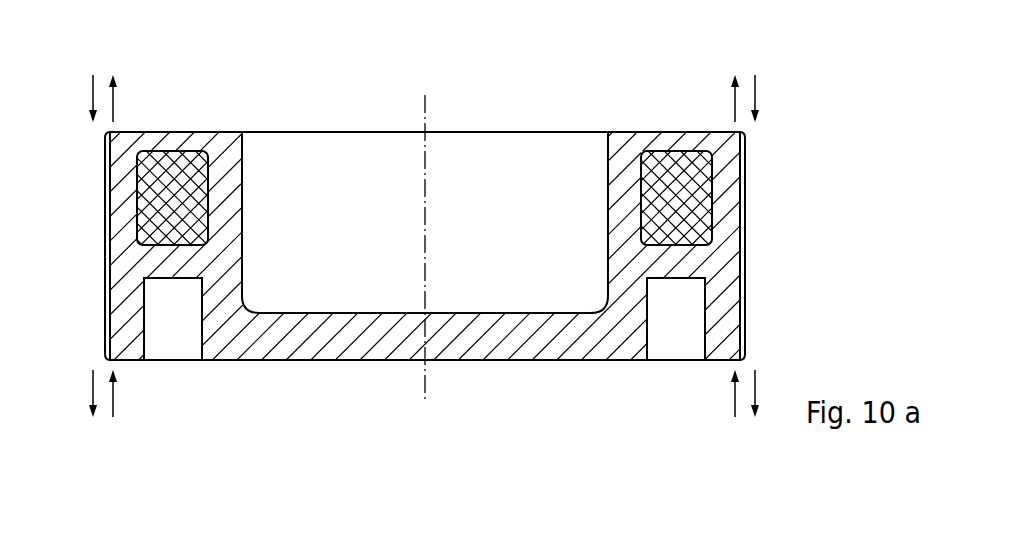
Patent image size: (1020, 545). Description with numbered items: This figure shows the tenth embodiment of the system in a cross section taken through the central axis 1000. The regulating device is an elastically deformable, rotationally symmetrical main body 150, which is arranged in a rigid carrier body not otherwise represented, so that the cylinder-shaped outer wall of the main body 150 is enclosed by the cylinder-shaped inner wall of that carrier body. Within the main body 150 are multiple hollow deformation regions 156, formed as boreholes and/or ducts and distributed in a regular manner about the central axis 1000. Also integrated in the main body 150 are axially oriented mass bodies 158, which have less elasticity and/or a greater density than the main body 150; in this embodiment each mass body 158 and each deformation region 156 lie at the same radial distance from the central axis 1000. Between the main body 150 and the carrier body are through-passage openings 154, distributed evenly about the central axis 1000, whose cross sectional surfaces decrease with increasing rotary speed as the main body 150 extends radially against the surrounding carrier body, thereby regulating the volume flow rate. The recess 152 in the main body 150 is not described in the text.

The central axis 1000 is at (425, 106).
The main body 150 is at (745, 212).
The recess / cavity 152 is at (343, 180).
The through-passage opening 154 is at (104, 242).
The deformation region 156 is at (175, 347).
The mass body 158 is at (177, 178).